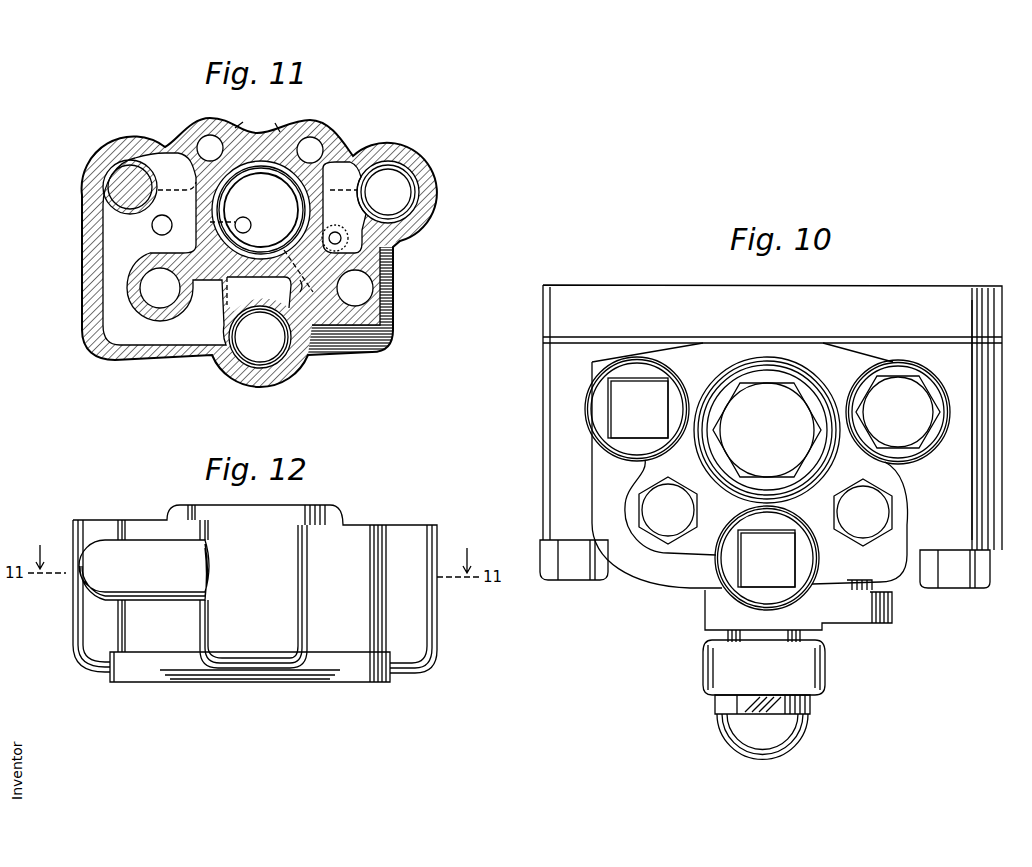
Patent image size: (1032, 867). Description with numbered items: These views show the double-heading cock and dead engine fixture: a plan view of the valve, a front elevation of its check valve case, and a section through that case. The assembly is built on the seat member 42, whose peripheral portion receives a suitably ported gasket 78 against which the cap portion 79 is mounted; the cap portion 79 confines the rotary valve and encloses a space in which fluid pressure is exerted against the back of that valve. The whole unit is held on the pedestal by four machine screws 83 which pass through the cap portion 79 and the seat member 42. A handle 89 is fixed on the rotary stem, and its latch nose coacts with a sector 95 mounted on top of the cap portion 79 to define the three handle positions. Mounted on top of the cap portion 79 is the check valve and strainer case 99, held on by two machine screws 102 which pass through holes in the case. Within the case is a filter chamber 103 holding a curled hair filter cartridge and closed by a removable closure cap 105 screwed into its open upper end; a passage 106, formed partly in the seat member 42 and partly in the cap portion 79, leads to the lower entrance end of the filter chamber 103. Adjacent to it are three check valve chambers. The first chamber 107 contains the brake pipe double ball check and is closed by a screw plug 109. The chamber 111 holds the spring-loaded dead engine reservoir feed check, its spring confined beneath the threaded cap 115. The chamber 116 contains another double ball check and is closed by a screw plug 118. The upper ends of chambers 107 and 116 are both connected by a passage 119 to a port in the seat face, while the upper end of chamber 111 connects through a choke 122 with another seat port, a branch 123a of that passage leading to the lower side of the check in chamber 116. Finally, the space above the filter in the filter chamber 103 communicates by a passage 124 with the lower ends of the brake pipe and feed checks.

In FIG. 10, the seat member 42 is at (633, 289).
In FIG. 10, the gasket 78 is at (543, 337).
In FIG. 10, the cap portion 79 is at (547, 403).
In FIG. 10, the machine screws 83 is at (568, 580).
In FIG. 10, the handle 89 is at (826, 684).
In FIG. 10, the sector 95 is at (892, 628).
In FIG. 11, the check valve and strainer case 99 is at (84, 275).
In FIG. 10, the check valve and strainer case 99 is at (598, 475).
In FIG. 12, the check valve and strainer case 99 is at (437, 585).
In FIG. 10, the machine screws 102 is at (660, 528).
In FIG. 11, the filter chamber 103 is at (262, 224).
In FIG. 10, the closure cap 105 is at (738, 398).
In FIG. 11, the passage 106 is at (243, 218).
In FIG. 11, the first chamber 107 is at (118, 177).
In FIG. 10, the screw plug 109 is at (637, 409).
In FIG. 11, the chamber 111 is at (418, 198).
In FIG. 10, the threaded cap 115 is at (910, 385).
In FIG. 11, the chamber 116 is at (287, 370).
In FIG. 10, the screw plug 118 is at (750, 572).
In FIG. 11, the passage 119 is at (170, 338).
In FIG. 11, the choke 122 is at (340, 250).
In FIG. 11, the branch passage 123a is at (266, 292).
In FIG. 11, the passage 124 is at (257, 120).